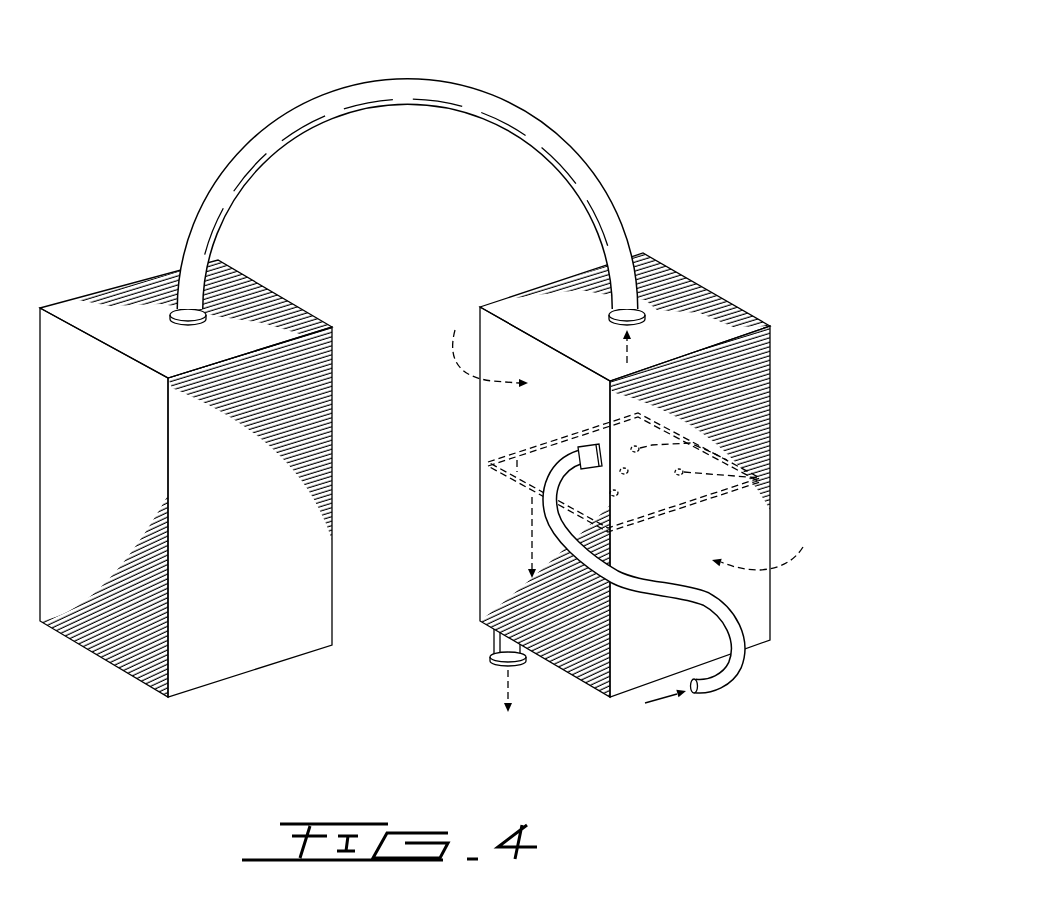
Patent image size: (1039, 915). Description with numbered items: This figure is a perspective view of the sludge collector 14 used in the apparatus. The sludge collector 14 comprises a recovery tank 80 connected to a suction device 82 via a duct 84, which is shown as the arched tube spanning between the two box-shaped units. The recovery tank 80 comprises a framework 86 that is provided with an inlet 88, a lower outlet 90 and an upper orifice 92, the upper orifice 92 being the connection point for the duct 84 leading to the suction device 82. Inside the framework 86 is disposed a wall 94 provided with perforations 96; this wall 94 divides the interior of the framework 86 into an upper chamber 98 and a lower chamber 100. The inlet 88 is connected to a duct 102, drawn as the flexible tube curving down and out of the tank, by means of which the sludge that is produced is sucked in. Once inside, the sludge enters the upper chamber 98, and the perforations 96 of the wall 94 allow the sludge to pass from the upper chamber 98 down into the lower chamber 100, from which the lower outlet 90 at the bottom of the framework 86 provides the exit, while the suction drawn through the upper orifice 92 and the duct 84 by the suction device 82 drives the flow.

The sludge collector 14 is at (485, 365).
The recovery tank 80 is at (663, 458).
The suction device 82 is at (315, 600).
The duct 84 is at (232, 172).
The framework 86 is at (781, 352).
The inlet 88 is at (588, 445).
The lower outlet 90 is at (490, 651).
The upper orifice 92 is at (608, 291).
The wall 94 is at (517, 472).
The perforations 96 is at (757, 477).
The upper chamber 98 is at (482, 341).
The lower chamber 100 is at (778, 544).
The duct 102 is at (729, 657).